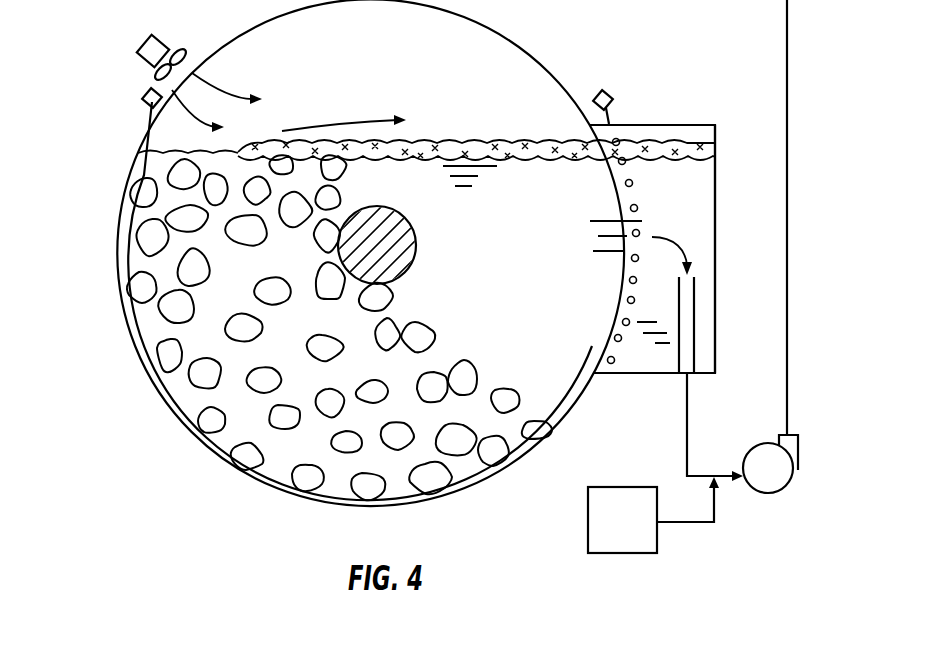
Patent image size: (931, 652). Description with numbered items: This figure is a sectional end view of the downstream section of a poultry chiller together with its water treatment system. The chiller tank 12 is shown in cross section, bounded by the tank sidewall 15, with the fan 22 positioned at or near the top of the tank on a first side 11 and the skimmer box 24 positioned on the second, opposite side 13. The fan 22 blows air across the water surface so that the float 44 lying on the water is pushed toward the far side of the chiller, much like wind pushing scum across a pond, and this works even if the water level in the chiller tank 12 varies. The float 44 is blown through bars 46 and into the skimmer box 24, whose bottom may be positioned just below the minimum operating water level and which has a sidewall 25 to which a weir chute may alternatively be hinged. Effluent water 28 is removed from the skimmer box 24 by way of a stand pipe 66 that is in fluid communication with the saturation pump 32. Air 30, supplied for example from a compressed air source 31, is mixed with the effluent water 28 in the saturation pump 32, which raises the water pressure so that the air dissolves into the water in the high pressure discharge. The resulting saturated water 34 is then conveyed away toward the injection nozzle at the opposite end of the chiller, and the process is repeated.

The first side 11 is at (112, 408).
The chiller tank 12 is at (118, 253).
The second side 13 is at (578, 445).
The tank sidewall 15 is at (128, 326).
The fan 22 is at (110, 51).
The skimmer box 24 is at (746, 245).
The sidewall 25 is at (715, 170).
The effluent water 28 is at (687, 415).
The air 30 is at (700, 522).
The compressed air source 31 is at (620, 553).
The saturation pump 32 is at (818, 460).
The saturated water 34 is at (787, 97).
The float 44 is at (525, 135).
The bars 46 is at (633, 183).
The stand pipe 66 is at (694, 300).